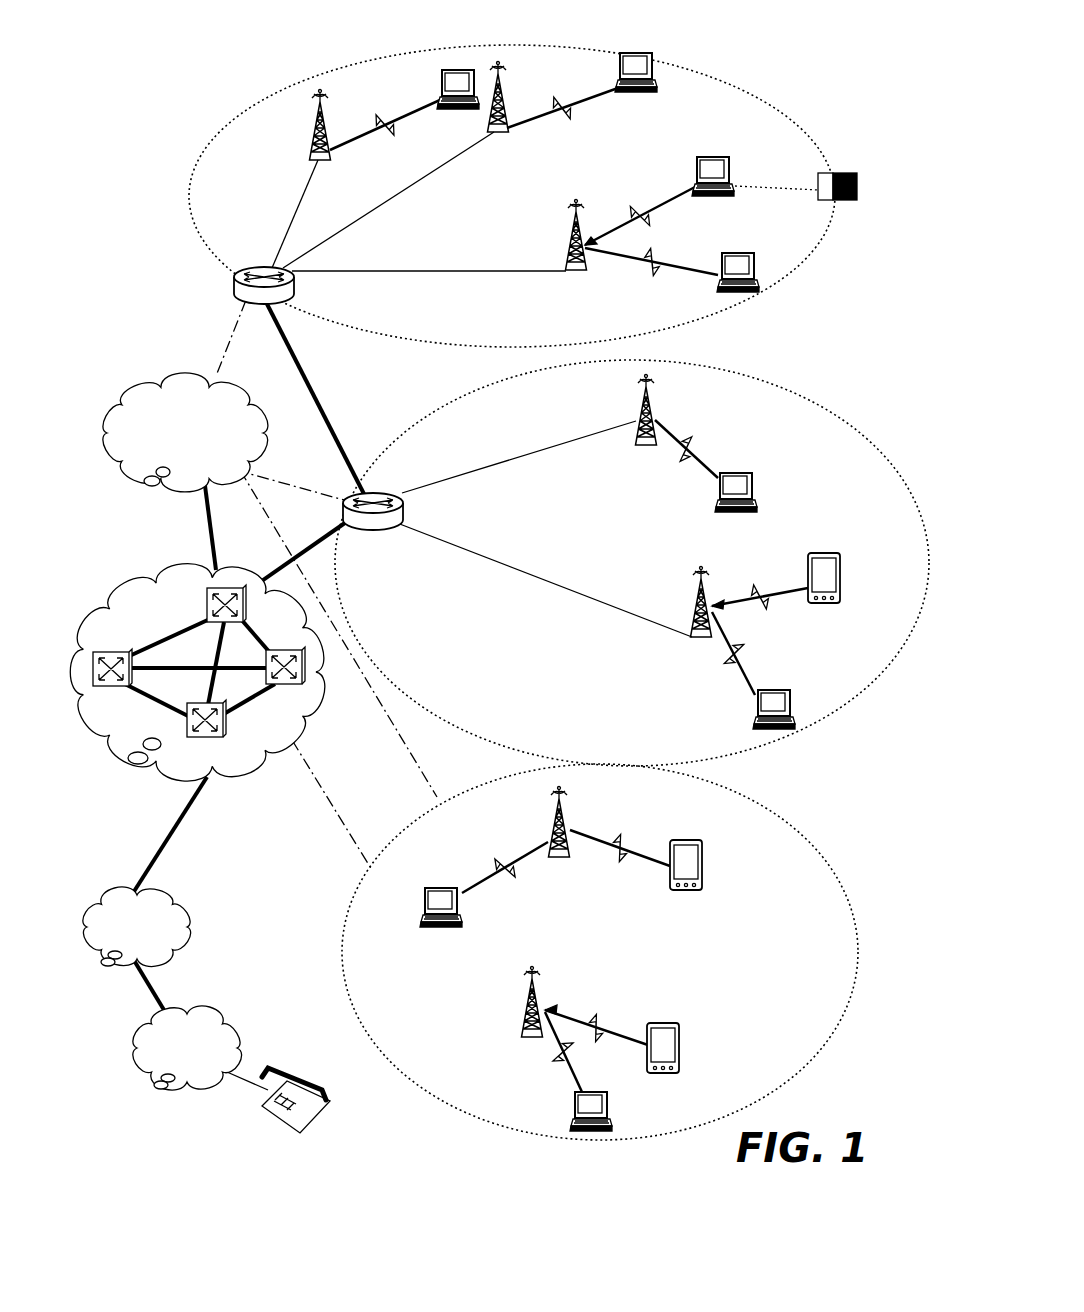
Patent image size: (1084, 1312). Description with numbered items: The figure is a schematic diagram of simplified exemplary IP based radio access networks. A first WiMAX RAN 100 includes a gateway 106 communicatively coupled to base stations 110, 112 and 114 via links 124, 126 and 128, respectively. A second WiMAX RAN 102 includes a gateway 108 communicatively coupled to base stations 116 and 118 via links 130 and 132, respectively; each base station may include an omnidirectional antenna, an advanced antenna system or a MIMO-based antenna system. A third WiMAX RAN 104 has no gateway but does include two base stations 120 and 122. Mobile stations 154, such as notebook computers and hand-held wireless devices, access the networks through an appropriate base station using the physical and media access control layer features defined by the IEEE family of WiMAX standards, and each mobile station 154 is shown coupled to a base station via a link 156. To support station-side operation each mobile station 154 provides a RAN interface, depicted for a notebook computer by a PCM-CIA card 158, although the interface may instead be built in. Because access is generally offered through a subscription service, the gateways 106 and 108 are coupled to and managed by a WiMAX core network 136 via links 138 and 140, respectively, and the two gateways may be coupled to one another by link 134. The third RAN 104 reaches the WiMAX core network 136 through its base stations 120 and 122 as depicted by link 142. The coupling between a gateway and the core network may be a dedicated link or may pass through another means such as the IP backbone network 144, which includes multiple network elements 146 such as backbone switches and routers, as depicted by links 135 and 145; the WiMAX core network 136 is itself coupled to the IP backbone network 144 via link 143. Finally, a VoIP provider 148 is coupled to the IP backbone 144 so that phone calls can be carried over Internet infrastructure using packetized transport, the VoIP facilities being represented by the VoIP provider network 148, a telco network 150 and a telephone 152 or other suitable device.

The WiMAX RAN 1 100 is at (750, 97).
The WiMAX RAN 2 102 is at (856, 440).
The WiMAX RAN 3 104 is at (818, 851).
The gateway 106 is at (236, 270).
The gateway 108 is at (412, 502).
The base station 110 is at (310, 130).
The base station 112 is at (512, 102).
The base station 114 is at (566, 243).
The base station 116 is at (662, 421).
The base station 118 is at (692, 608).
The base station 120 is at (548, 842).
The base station 122 is at (525, 1028).
The link 124 is at (278, 250).
The link 126 is at (320, 250).
The link 128 is at (478, 270).
The link 130 is at (516, 455).
The link 132 is at (557, 590).
The link 134 is at (305, 372).
The link 135 is at (332, 578).
The WiMAX core network 136 is at (200, 378).
The link 138 is at (233, 333).
The link 140 is at (303, 487).
The link 142 is at (370, 695).
The link 143 is at (212, 503).
The IP backbone network 144 is at (197, 653).
The link 145 is at (333, 797).
The network elements 146 is at (241, 741).
The VoIP provider network 148 is at (200, 892).
The telco network 150 is at (135, 1066).
The telephone 152 is at (316, 1120).
The mobile station 154 is at (438, 82).
The link 156 is at (395, 140).
The PCM-CIA card 158 is at (848, 174).